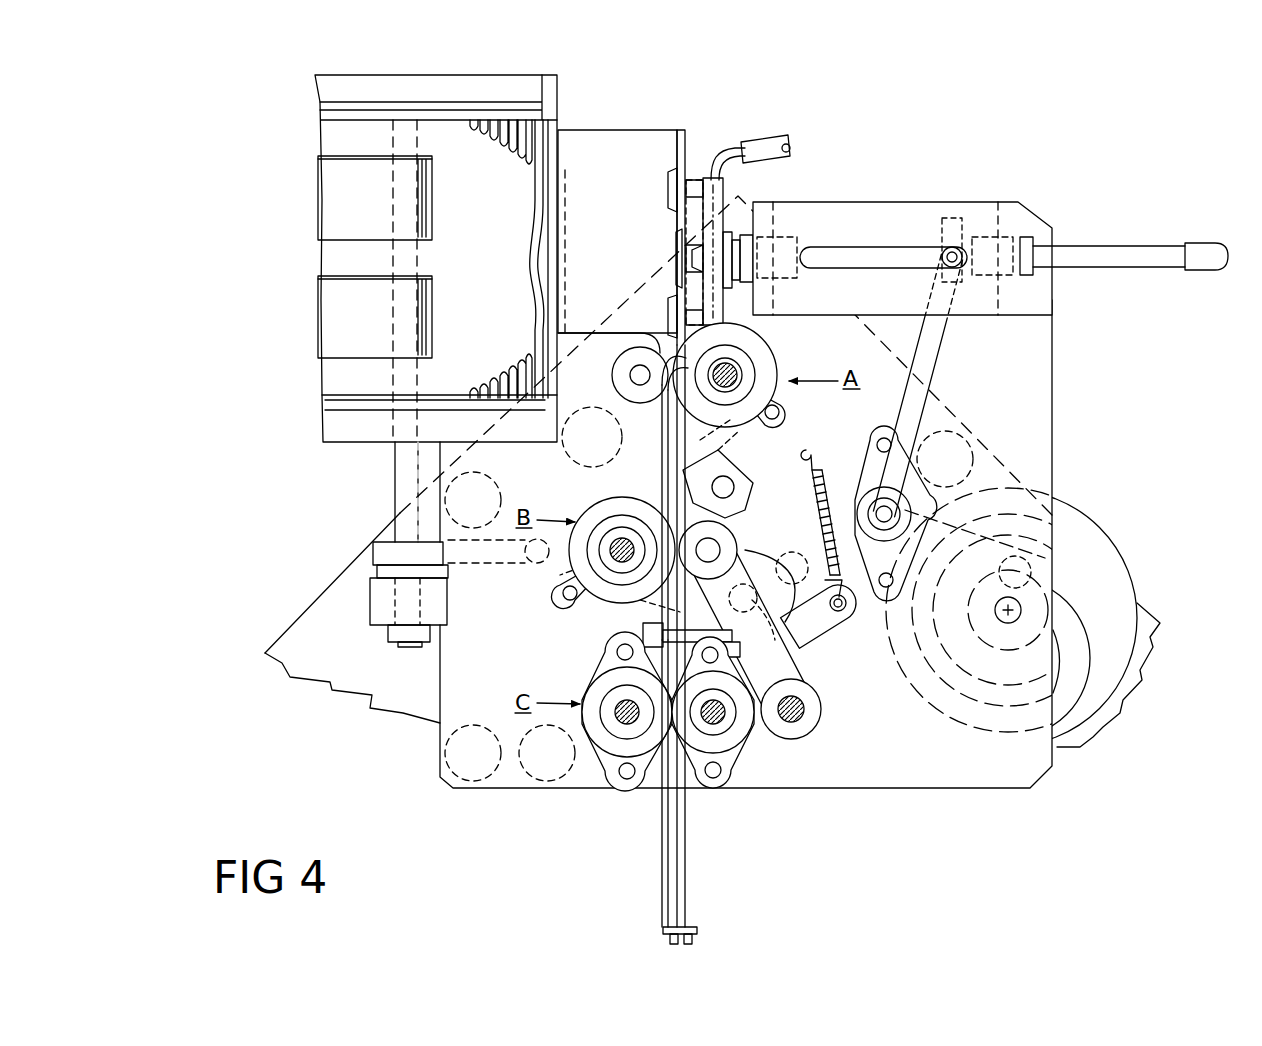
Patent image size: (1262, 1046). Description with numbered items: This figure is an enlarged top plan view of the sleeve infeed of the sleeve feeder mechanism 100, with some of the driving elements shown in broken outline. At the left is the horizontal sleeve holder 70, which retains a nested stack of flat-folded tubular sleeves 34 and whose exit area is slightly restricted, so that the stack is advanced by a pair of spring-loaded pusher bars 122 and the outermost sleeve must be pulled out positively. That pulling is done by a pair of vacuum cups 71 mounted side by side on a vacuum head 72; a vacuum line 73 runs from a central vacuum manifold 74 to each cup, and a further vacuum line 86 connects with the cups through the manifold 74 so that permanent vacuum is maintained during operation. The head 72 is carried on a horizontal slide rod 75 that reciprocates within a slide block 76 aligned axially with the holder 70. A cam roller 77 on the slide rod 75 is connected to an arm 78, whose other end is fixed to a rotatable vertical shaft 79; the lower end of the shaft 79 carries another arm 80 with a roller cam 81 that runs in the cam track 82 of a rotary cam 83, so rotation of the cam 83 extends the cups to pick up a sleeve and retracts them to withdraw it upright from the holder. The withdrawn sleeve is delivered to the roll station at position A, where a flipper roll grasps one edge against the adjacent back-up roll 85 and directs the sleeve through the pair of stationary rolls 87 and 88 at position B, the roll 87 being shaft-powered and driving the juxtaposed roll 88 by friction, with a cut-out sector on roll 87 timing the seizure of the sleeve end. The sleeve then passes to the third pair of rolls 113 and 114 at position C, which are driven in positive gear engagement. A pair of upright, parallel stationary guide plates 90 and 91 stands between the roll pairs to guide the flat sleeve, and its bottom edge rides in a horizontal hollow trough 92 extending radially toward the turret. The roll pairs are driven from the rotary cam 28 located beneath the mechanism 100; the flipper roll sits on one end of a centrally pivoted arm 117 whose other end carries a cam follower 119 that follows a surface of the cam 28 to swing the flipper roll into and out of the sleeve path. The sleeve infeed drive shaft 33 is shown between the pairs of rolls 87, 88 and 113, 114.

The rotary cam 28 is at (806, 655).
The sleeve infeed drive shaft 33 is at (749, 629).
The sleeve 34 is at (536, 272).
The sleeve holder 70 is at (338, 400).
The vacuum cups 71 is at (673, 293).
The vacuum head 72 is at (682, 145).
The vacuum line 73 is at (695, 177).
The vacuum manifold 74 is at (724, 190).
The slide rod 75 is at (1120, 272).
The slide block 76 is at (1008, 200).
The cam roller 77 is at (950, 247).
The arm 78 is at (929, 385).
The vertical shaft 79 is at (880, 512).
The arm 80 is at (1008, 610).
The roller cam 81 is at (1045, 558).
The cam track 82 is at (1078, 663).
The rotary cam 83 is at (1078, 708).
The back-up roll 85 is at (773, 355).
The vacuum line 86 is at (770, 142).
The stationary roll 87 is at (603, 597).
The stationary roll 88 is at (718, 533).
The guide plate 90 is at (660, 452).
The guide plate 91 is at (684, 440).
The trough 92 is at (667, 873).
The sleeve feeder mechanism 100 is at (1060, 432).
The roll 113 is at (608, 772).
The roll 114 is at (723, 752).
The pivoted arm 117 is at (802, 523).
The cam follower 119 is at (839, 613).
The pusher bars 122 is at (340, 298).